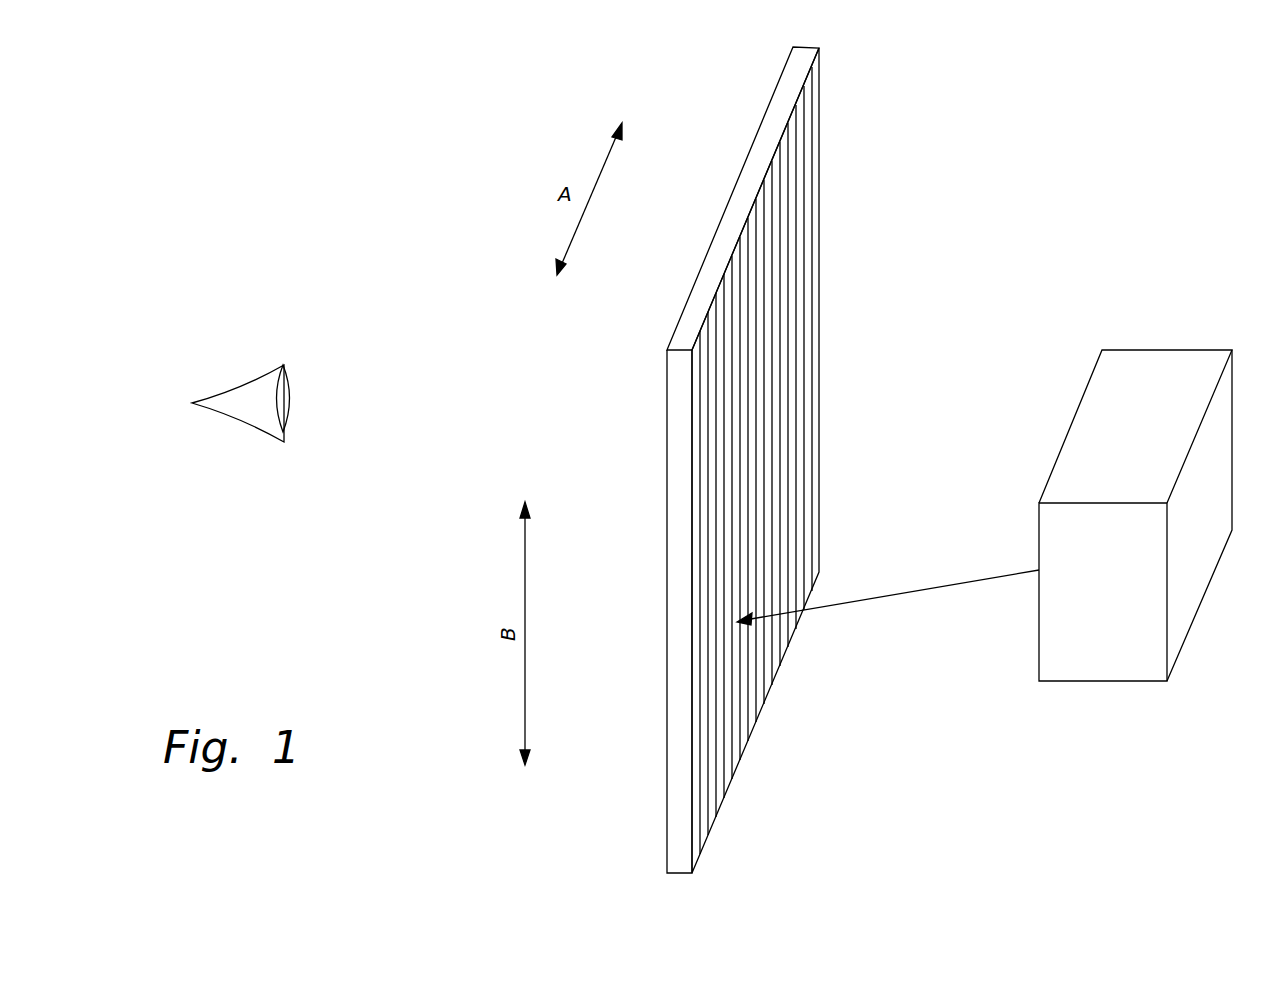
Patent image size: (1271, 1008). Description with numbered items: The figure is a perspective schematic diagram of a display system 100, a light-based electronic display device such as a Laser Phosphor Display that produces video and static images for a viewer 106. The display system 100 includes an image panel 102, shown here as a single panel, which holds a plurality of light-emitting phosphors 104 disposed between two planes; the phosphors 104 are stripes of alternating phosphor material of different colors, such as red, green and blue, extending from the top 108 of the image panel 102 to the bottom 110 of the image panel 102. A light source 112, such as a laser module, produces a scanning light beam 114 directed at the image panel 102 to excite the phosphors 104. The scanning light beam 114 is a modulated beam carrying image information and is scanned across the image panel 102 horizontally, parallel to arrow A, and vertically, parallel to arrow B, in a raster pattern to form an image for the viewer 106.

The display system 100 is at (232, 86).
The image panel 102 is at (666, 592).
The phosphors 104 is at (800, 258).
The viewer 106 is at (232, 376).
The top of the image panel 108 is at (746, 188).
The bottom of the image panel 110 is at (758, 713).
The light source 112 is at (1082, 422).
The scanning light beam 114 is at (937, 585).